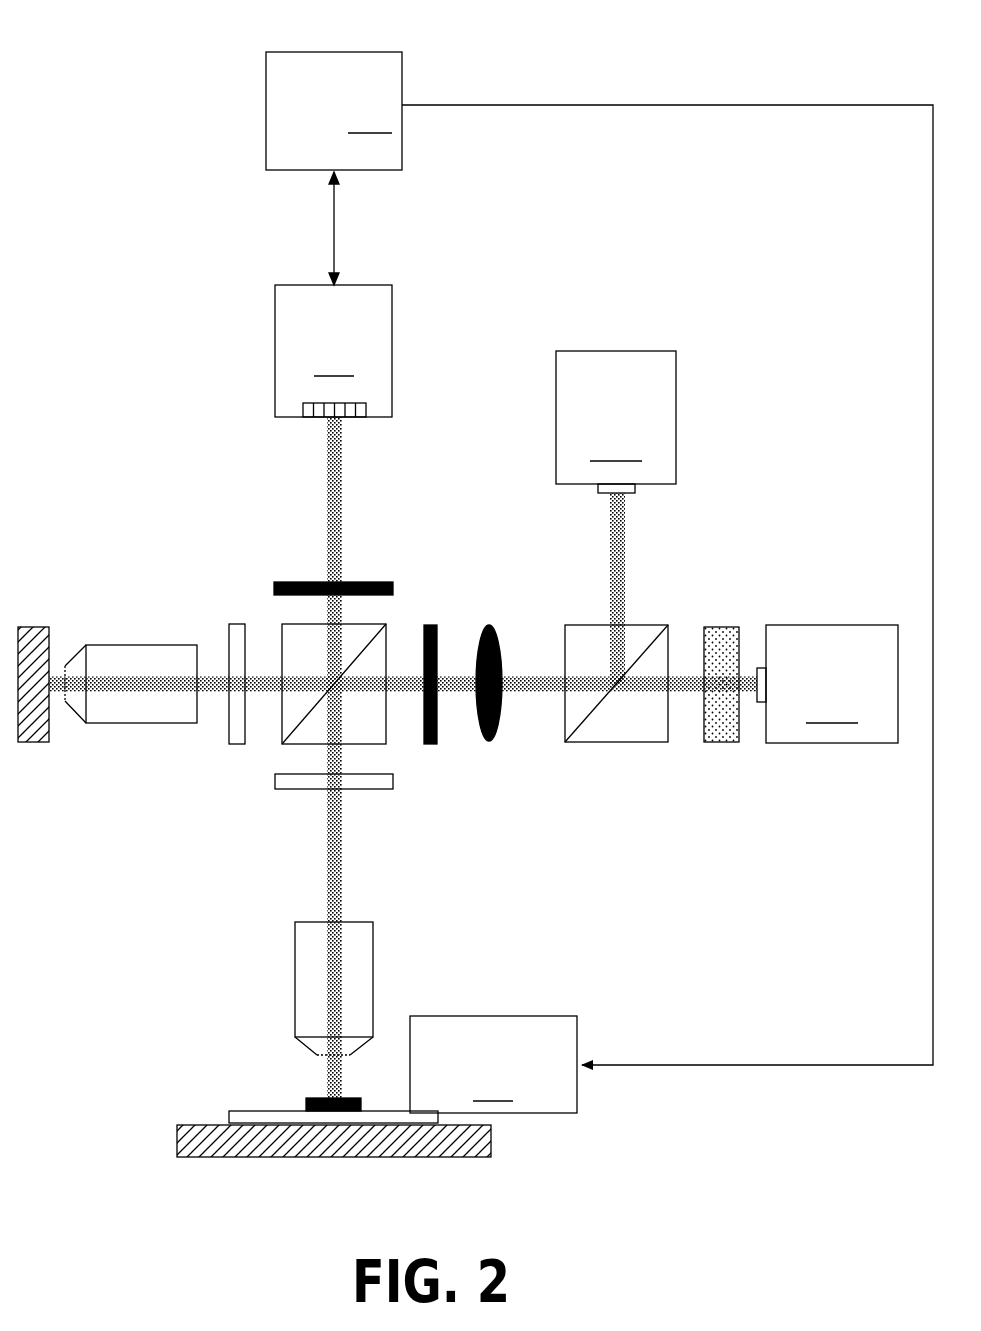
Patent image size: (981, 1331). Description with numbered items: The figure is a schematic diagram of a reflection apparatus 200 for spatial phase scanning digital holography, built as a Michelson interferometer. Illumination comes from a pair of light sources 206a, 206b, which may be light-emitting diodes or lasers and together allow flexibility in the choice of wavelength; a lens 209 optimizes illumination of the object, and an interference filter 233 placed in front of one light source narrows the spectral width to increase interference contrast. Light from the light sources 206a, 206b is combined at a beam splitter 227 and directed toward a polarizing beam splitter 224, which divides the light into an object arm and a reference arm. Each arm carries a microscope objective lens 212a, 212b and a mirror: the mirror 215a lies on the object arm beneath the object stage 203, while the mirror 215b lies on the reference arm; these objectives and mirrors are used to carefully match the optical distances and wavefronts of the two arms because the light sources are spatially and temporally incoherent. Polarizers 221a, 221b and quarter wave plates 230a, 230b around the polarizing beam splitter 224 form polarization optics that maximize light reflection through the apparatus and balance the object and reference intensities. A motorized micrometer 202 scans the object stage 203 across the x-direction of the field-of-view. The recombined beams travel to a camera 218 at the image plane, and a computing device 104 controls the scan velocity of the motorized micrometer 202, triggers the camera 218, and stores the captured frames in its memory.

The reflection apparatus 200 is at (162, 104).
The computing device 104 is at (334, 111).
The camera 218 is at (333, 351).
The light source 206a is at (616, 422).
The light source 206b is at (827, 684).
The motorized micrometer 202 is at (493, 1064).
The mirror 215b is at (25, 742).
The microscope objective lens 212a is at (120, 723).
The quarter wave plate 230a is at (240, 625).
The polarizing beam splitter 224 is at (385, 745).
The quarter wave plate 230b is at (295, 789).
The polarizer 221a is at (315, 577).
The polarizer 221b is at (433, 612).
The lens 209 is at (490, 742).
The beam splitter 227 is at (598, 742).
The interference filter 233 is at (717, 627).
The microscope objective lens 212b is at (373, 975).
The object stage 203 is at (280, 1110).
The mirror 215a is at (202, 1158).